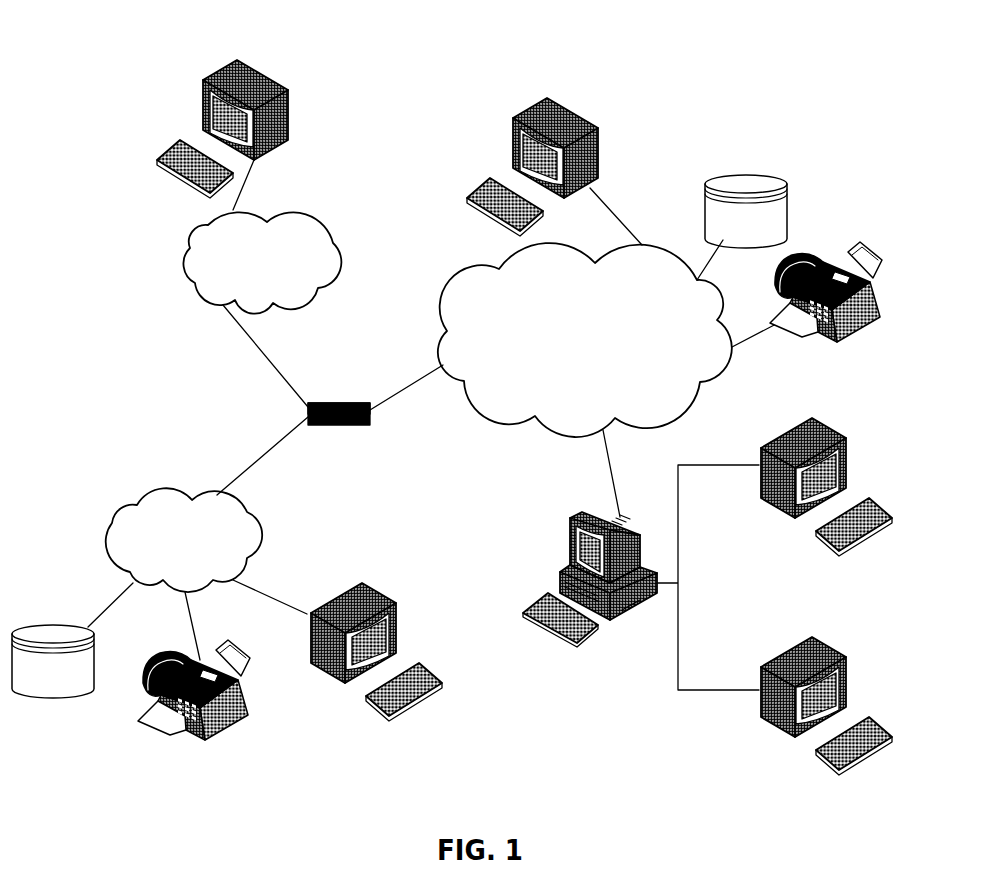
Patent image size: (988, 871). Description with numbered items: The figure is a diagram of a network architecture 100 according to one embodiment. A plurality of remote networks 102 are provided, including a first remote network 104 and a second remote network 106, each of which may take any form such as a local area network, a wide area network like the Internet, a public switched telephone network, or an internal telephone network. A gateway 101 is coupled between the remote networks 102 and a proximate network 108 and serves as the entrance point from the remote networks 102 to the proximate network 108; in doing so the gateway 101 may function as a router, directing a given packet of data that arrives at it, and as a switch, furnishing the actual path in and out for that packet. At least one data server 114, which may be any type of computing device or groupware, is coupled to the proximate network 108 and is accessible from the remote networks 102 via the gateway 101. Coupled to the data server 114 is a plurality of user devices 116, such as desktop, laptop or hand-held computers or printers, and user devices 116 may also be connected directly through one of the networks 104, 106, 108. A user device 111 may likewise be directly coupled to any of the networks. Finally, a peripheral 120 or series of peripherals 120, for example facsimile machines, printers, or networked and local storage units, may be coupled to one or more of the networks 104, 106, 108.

The architecture 100 is at (135, 41).
The gateway 101 is at (323, 403).
The remote networks 102 is at (163, 326).
The first remote network 104 is at (113, 513).
The second remote network 106 is at (333, 233).
The proximate network 108 is at (690, 407).
The user device 111 is at (598, 132).
The data server 114 is at (570, 533).
The user devices 116 is at (290, 100).
The peripheral 120 is at (787, 182).